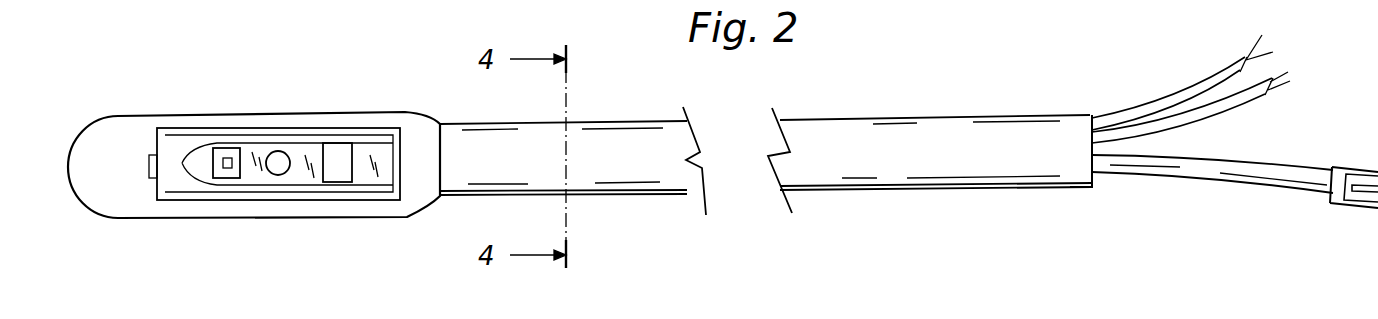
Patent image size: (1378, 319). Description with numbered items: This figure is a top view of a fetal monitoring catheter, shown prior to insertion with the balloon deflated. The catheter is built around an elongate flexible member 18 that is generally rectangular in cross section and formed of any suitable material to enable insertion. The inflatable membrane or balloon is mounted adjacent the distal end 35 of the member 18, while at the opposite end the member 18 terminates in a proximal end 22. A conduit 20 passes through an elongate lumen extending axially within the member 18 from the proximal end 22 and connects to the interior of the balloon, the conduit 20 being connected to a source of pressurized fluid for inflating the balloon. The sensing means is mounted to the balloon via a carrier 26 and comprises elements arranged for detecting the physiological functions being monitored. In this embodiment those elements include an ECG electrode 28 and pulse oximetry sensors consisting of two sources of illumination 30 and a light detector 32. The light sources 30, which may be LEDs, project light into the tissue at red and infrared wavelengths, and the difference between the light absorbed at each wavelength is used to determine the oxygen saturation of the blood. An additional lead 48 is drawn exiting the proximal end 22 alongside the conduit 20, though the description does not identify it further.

The distal end 35 is at (73, 193).
The carrier 26 is at (273, 192).
The sources of illumination 30 is at (230, 178).
The ECG electrode 28 is at (278, 151).
The light detector 32 is at (342, 183).
The flexible member 18 is at (985, 118).
The proximal end 22 is at (1074, 188).
The conduit 20 is at (1198, 80).
The wire 48 is at (1233, 100).